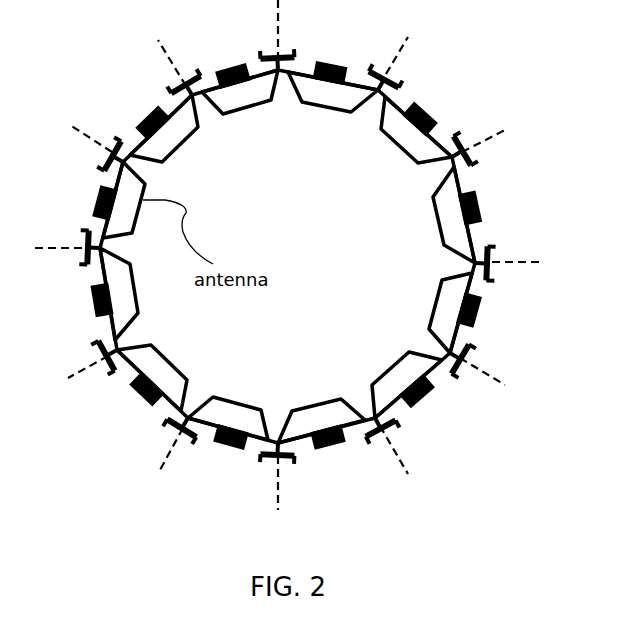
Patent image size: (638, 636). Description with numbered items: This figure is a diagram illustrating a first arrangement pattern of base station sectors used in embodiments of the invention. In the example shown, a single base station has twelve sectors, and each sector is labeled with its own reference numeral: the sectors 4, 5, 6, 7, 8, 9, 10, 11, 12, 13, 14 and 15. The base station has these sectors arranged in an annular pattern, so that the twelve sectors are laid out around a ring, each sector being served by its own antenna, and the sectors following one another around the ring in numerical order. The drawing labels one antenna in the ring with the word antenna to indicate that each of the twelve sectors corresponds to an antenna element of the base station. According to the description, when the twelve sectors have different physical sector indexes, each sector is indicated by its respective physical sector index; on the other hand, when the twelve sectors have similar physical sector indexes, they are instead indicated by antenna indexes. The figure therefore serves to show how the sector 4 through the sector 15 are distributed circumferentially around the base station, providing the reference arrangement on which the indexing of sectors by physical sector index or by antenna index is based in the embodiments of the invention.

The sector 4 is at (334, 50).
The sector 5 is at (449, 105).
The sector 6 is at (506, 213).
The sector 7 is at (505, 331).
The sector 8 is at (449, 439).
The sector 9 is at (347, 493).
The sector 10 is at (243, 493).
The sector 11 is at (120, 427).
The sector 12 is at (44, 320).
The sector 13 is at (82, 203).
The sector 14 is at (137, 104).
The sector 15 is at (217, 50).